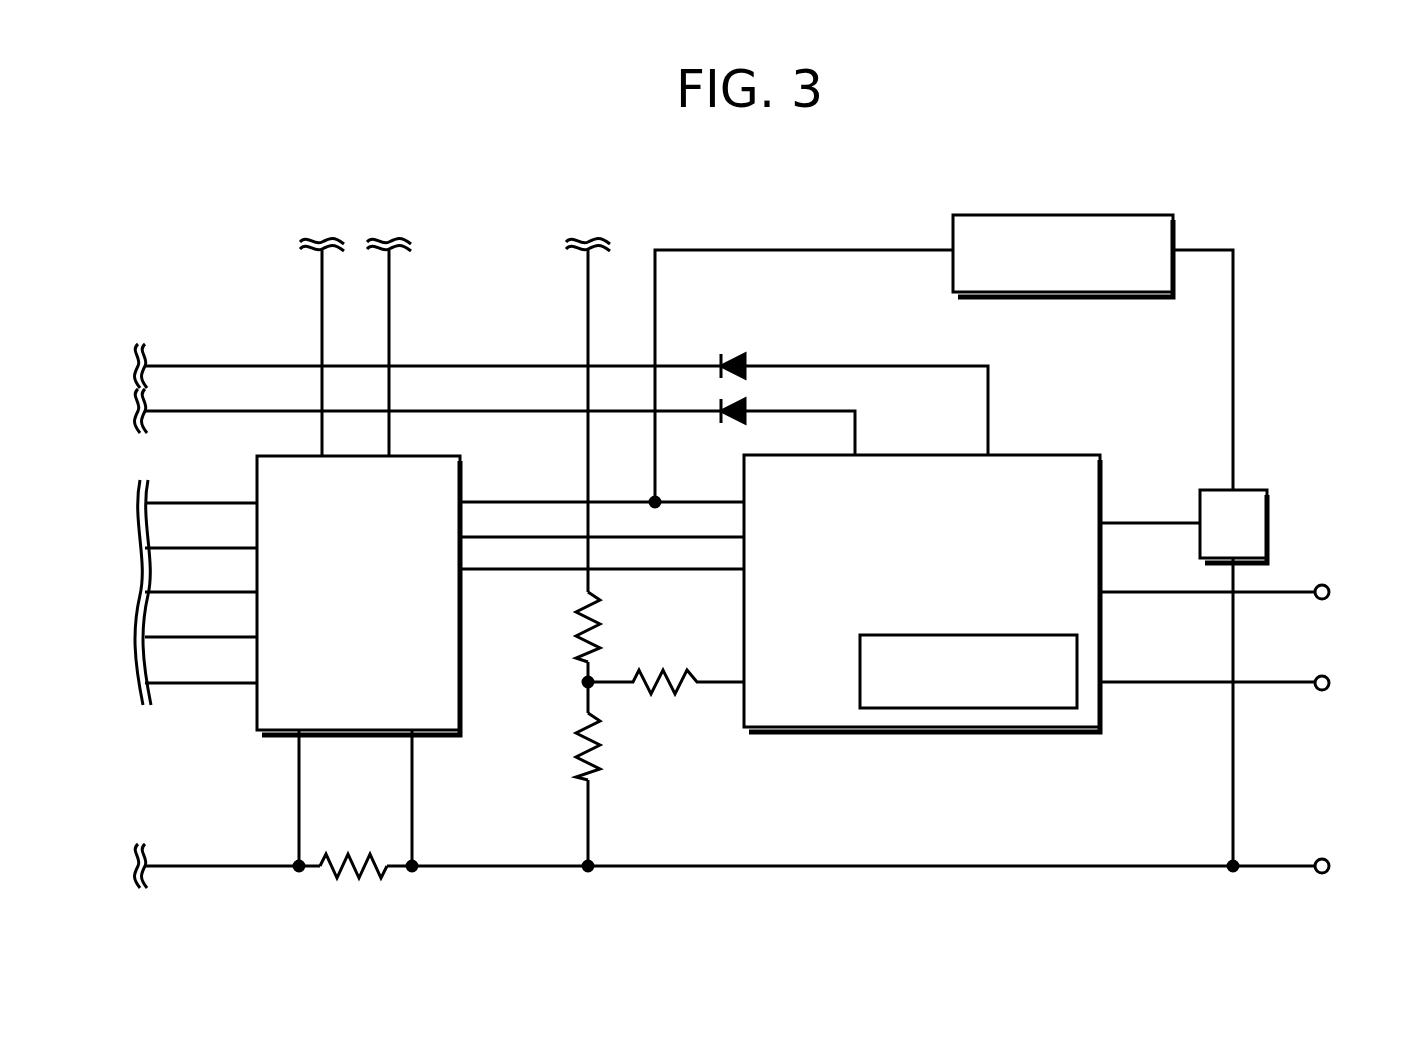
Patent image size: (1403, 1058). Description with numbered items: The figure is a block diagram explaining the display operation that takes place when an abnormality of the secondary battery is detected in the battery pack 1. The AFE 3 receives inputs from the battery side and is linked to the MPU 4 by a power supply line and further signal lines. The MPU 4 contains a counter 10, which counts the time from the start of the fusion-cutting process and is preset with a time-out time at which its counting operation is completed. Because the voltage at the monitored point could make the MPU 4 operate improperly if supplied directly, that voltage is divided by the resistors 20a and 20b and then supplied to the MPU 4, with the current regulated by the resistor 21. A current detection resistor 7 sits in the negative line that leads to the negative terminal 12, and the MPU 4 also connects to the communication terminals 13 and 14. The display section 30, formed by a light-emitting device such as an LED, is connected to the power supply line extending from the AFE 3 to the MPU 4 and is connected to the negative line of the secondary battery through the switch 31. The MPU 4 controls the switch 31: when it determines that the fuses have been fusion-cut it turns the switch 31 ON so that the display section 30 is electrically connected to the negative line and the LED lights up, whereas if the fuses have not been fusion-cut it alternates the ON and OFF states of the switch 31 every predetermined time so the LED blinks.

The battery pack 1 is at (903, 138).
The AFE 3 is at (462, 700).
The MPU 4 is at (1073, 455).
The current detection resistor 7 is at (372, 878).
The counter 10 is at (1055, 708).
The negative terminal 12 is at (1325, 859).
The communication terminal 13 is at (1325, 585).
The communication terminal 14 is at (1325, 676).
The resistor 20a is at (592, 605).
The resistor 20b is at (598, 768).
The resistor 21 is at (670, 692).
The display section 30 is at (1143, 215).
The switch 31 is at (1252, 490).